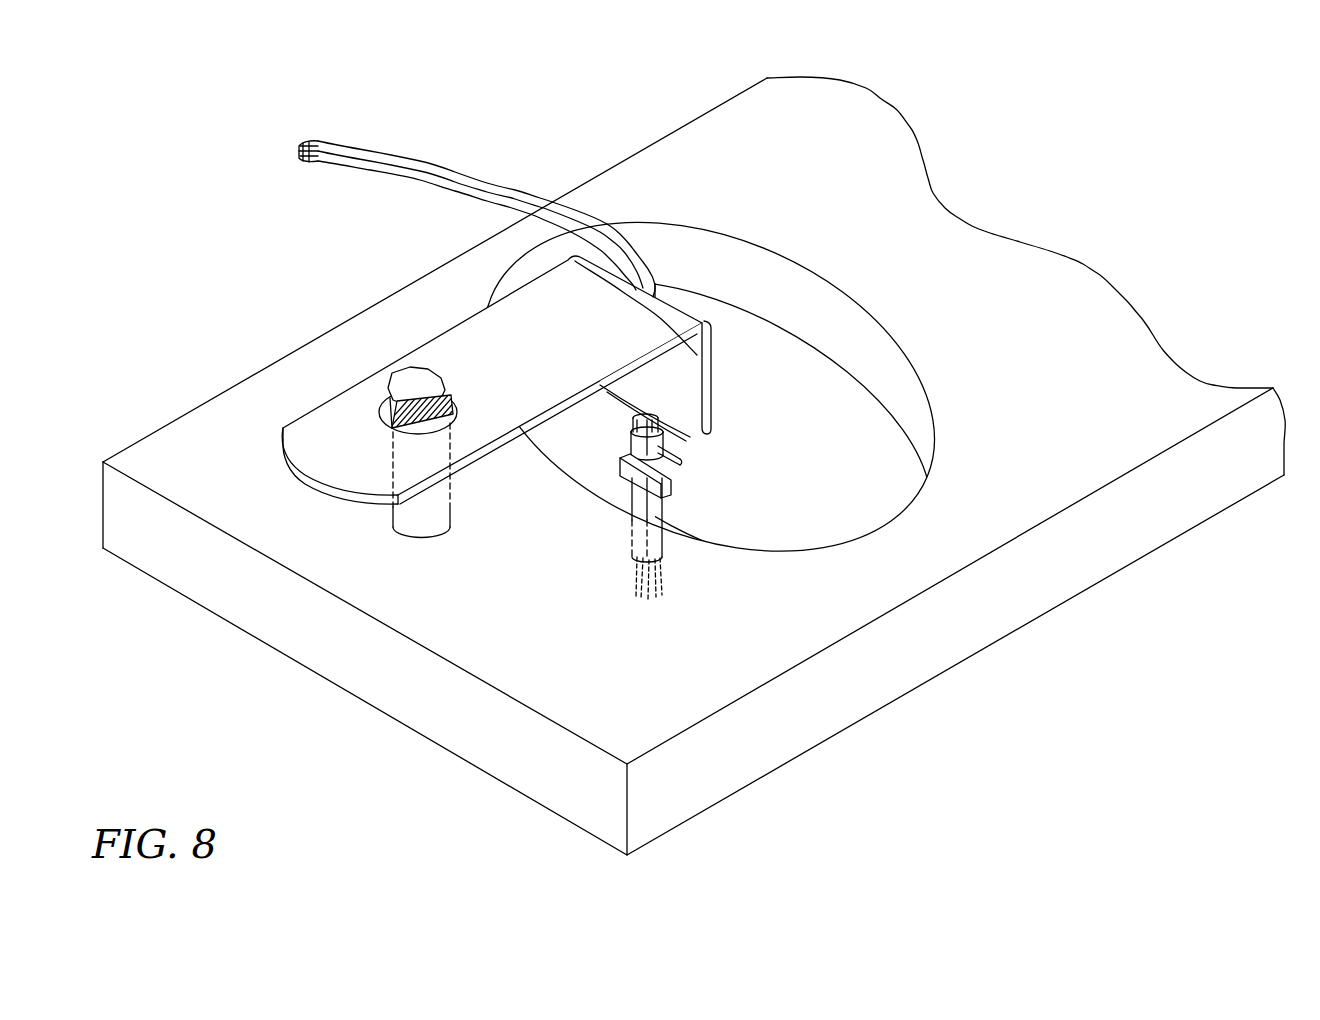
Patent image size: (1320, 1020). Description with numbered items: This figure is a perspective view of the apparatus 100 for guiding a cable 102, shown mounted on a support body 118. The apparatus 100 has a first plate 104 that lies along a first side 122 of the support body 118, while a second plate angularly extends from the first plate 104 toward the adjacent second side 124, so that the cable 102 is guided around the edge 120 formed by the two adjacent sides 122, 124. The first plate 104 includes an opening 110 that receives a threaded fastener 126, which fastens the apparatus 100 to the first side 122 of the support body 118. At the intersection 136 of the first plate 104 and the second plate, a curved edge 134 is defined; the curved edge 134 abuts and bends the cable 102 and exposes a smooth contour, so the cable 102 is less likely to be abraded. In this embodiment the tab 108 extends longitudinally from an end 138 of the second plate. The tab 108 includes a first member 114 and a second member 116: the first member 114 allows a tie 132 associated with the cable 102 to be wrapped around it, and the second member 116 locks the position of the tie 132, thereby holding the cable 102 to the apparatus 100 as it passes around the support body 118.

The apparatus 100 is at (318, 377).
The cable 102 is at (427, 160).
The first plate 104 is at (544, 367).
The tab 108 is at (665, 445).
The opening 110 is at (393, 434).
The first member 114 is at (670, 479).
The second member 116 is at (658, 514).
The support body 118 is at (805, 710).
The edge 120 is at (745, 228).
The first side 122 is at (648, 669).
The second side 124 is at (813, 308).
The threaded fastener 126 is at (421, 385).
The tie 132 is at (672, 461).
The curved edge 134 is at (683, 307).
The intersection 136 is at (704, 326).
The end 138 is at (612, 397).